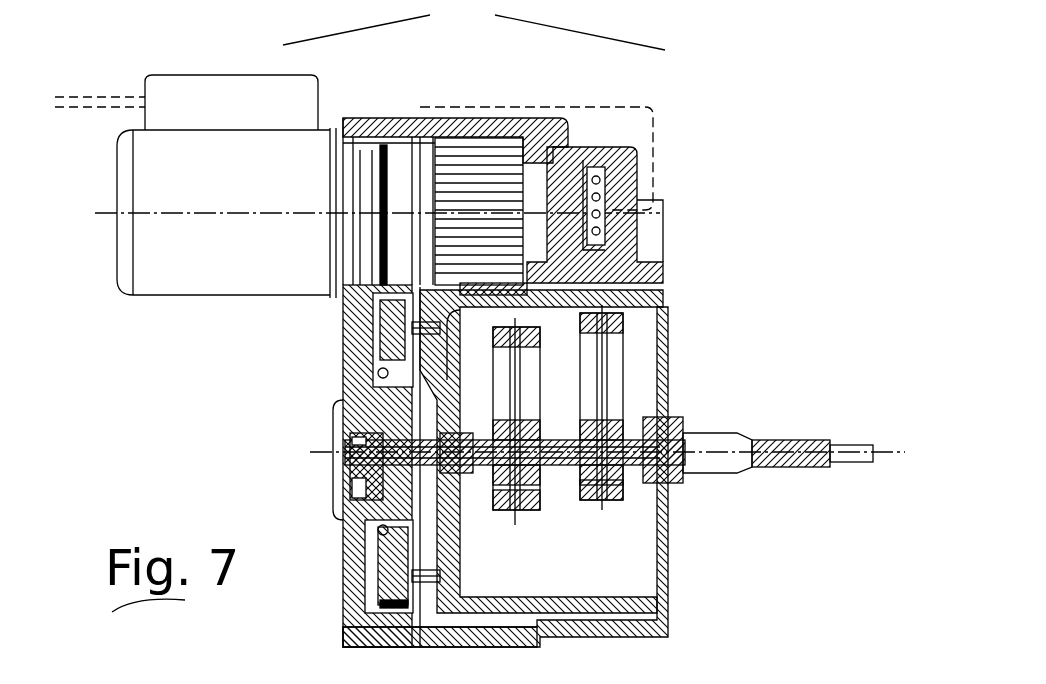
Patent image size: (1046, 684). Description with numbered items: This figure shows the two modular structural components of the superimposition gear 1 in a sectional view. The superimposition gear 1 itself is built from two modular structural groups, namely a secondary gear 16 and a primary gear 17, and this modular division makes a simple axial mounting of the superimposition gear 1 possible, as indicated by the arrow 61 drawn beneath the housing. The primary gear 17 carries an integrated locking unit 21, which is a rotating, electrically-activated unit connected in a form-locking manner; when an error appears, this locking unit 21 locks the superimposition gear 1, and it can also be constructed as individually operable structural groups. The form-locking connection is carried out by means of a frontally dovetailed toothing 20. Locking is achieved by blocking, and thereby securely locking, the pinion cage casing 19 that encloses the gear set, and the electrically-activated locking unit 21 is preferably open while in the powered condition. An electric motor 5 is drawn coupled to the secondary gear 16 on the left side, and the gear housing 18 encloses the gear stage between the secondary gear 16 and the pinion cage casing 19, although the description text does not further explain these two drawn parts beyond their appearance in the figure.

The superimposition gear 1 is at (474, 25).
The electric motor 5 is at (155, 157).
The secondary gear 16 is at (388, 128).
The primary gear 17 is at (546, 137).
The gear housing 18 is at (640, 327).
The pinion cage casing 19 is at (660, 556).
The frontally dovetailed toothing 20 is at (460, 285).
The locking unit 21 is at (600, 163).
The arrow 61 is at (440, 655).